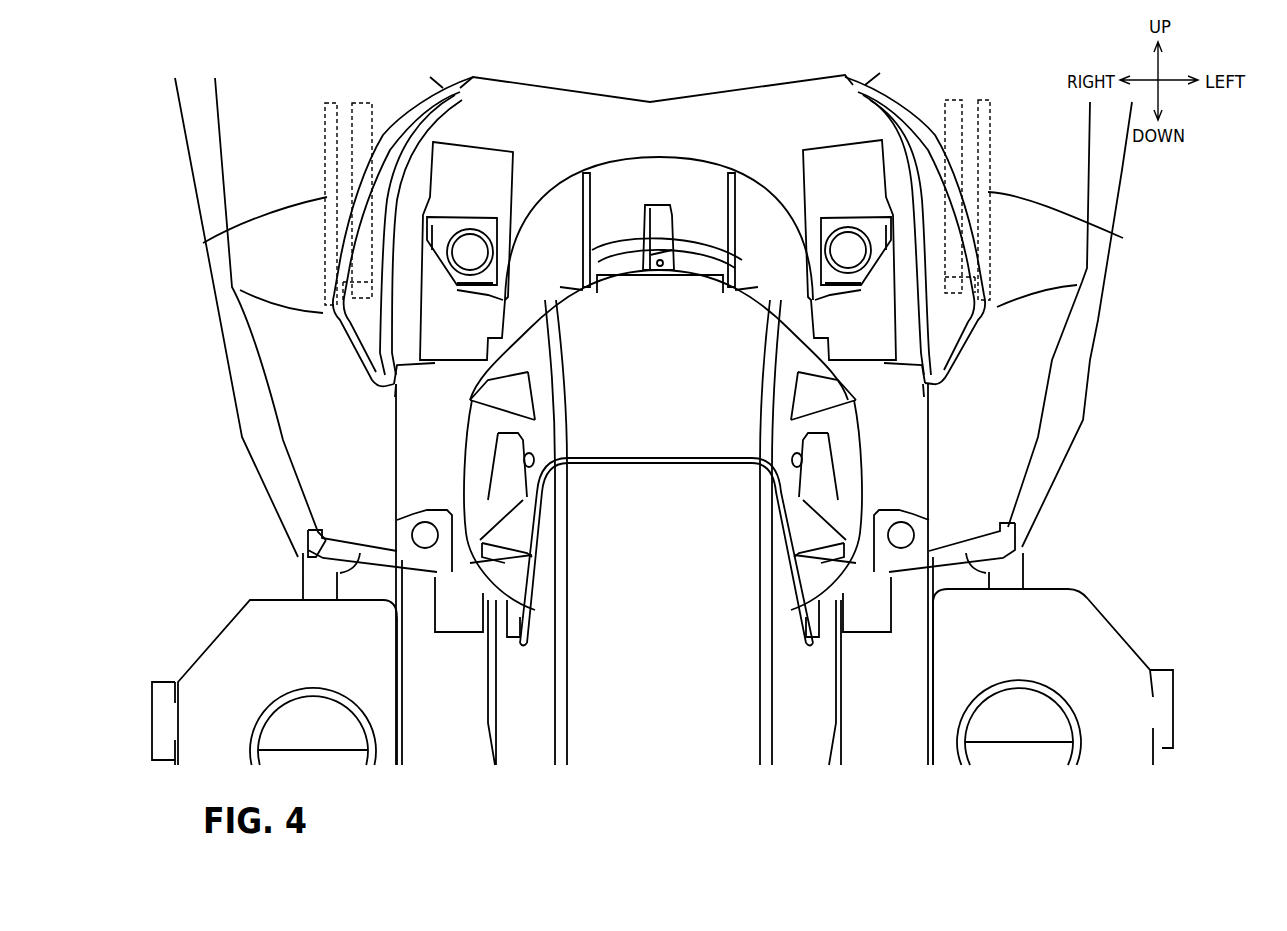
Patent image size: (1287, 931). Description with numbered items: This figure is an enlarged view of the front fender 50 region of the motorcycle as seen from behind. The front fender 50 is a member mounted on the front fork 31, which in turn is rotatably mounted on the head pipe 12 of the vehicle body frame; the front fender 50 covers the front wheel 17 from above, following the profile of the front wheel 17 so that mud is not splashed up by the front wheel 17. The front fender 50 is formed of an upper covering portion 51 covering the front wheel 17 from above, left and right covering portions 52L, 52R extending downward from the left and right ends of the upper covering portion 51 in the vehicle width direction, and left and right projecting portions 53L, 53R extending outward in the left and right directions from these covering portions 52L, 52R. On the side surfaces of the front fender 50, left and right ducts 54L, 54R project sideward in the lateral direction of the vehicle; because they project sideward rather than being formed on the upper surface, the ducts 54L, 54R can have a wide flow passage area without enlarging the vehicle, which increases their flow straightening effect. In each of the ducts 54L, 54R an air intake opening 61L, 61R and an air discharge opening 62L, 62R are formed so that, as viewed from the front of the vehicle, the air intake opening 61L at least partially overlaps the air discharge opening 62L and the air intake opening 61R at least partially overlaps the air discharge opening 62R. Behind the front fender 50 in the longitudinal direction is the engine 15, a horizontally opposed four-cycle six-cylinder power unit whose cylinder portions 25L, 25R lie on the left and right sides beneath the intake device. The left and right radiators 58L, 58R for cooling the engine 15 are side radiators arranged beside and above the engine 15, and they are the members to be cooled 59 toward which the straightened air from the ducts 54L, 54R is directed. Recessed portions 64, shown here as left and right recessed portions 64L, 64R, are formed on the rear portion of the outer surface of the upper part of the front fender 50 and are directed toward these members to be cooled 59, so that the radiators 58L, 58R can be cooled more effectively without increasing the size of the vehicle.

The head pipe 12 is at (653, 122).
The engine 15 is at (1096, 581).
The front wheel 17 is at (668, 707).
The cylinder portion 25R is at (227, 660).
The cylinder portion 25L is at (1102, 648).
The front fork 31 is at (803, 708).
The front fender 50 is at (443, 426).
The upper covering portion 51 is at (690, 307).
The covering portion 52R is at (500, 492).
The covering portion 52L is at (826, 492).
The projecting portion 53R is at (482, 440).
The projecting portion 53L is at (844, 440).
The duct 54R is at (502, 486).
The duct 54L is at (823, 488).
The radiator 58R is at (200, 243).
The radiator 58L is at (1123, 238).
The members to be cooled 59 is at (663, 252).
The air intake opening 61R is at (487, 542).
The air intake opening 61L is at (845, 545).
The air discharge opening 62R is at (534, 458).
The air discharge opening 62L is at (792, 458).
The right side cover 64R is at (493, 378).
The left side cover 64L is at (835, 380).
The recessed portions 64 is at (662, 440).